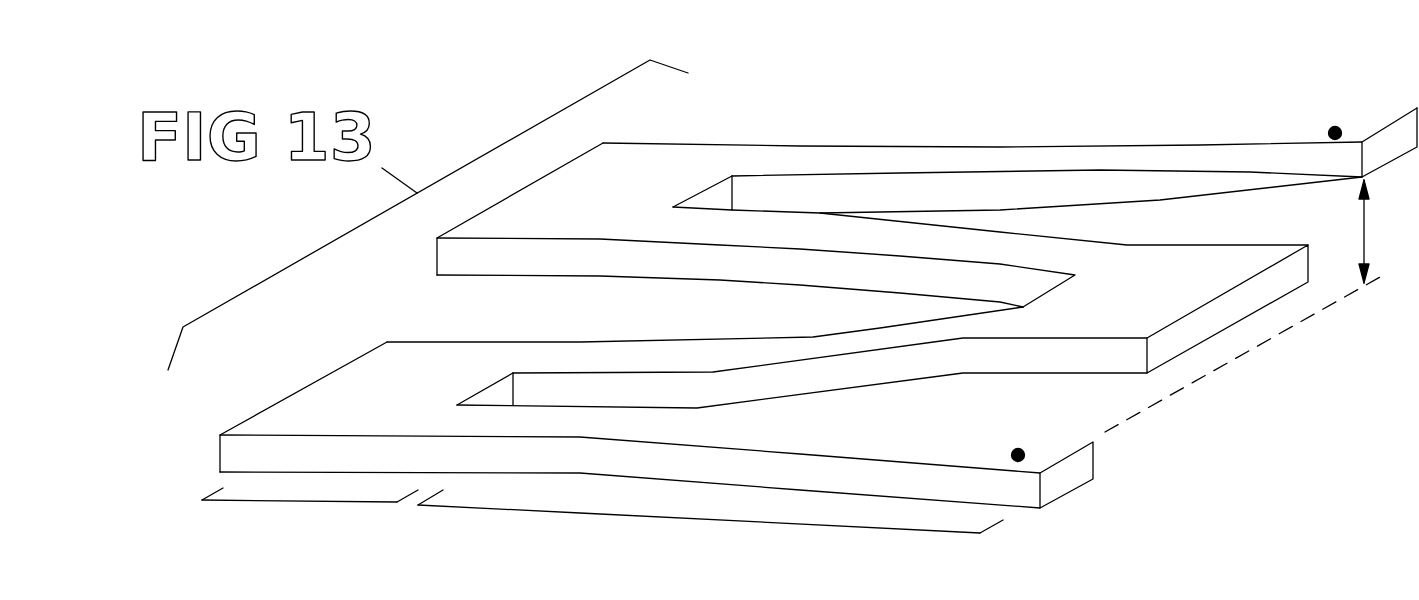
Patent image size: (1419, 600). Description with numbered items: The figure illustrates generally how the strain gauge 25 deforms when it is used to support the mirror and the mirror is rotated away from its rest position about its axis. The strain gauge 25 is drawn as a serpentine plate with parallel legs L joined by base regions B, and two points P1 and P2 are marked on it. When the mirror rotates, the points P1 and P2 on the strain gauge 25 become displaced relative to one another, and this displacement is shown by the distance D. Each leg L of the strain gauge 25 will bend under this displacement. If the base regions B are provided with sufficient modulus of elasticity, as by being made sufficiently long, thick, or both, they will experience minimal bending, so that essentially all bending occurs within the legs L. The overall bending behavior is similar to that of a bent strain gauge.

The strain gauge 25 is at (745, 118).
The point P1 is at (1335, 133).
The point P2 is at (1018, 455).
The distance D is at (1364, 232).
The base region B is at (298, 502).
The leg L is at (698, 520).